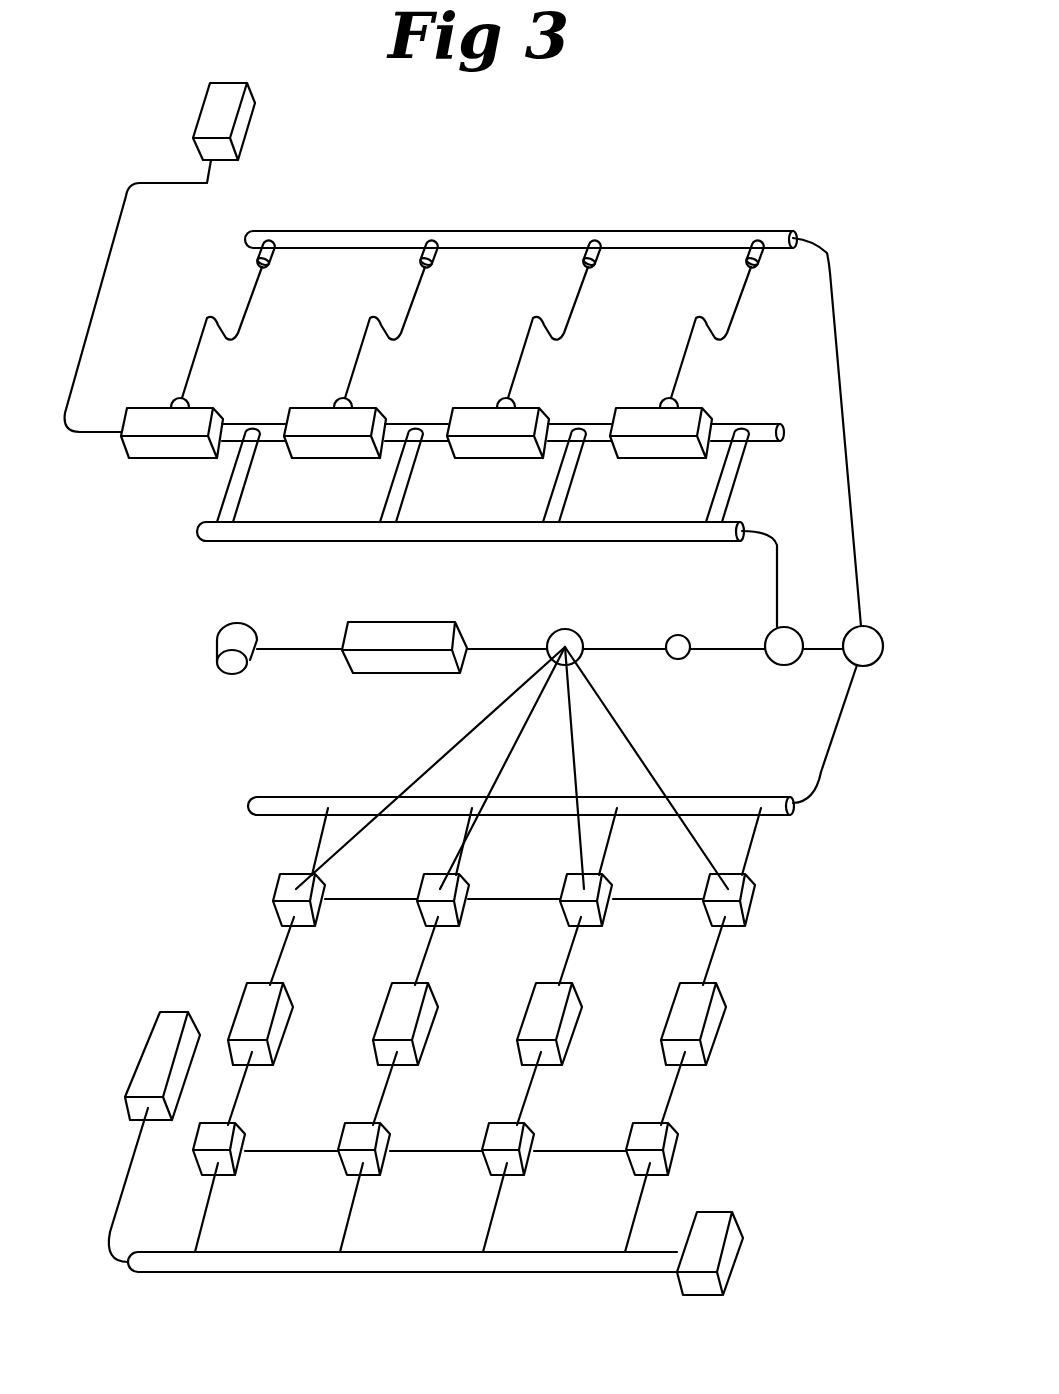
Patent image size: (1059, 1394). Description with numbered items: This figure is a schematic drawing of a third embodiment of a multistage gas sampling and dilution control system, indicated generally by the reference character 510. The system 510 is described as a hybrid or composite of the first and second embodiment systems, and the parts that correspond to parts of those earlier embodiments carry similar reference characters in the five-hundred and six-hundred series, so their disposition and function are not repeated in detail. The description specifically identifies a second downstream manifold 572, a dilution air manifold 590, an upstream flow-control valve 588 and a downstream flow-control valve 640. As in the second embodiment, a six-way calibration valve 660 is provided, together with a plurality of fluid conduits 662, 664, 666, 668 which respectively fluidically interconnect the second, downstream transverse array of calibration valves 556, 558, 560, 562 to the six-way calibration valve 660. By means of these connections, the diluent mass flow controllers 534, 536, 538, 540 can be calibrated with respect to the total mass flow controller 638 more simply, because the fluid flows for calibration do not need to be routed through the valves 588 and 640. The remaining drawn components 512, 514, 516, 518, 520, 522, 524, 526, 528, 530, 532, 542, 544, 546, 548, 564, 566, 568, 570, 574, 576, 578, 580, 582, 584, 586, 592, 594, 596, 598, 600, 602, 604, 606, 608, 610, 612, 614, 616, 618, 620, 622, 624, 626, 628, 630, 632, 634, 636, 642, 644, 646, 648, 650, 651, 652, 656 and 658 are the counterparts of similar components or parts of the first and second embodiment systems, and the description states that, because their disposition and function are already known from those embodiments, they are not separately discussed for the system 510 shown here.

The multistage gas sampling and dilution control system 510 is at (778, 176).
The source module 512 is at (167, 1032).
The lower bus rod 514 is at (378, 1262).
The lead 516 is at (123, 1190).
The connector 518 is at (240, 1158).
The connector 520 is at (385, 1158).
The connector 522 is at (530, 1160).
The connector 524 is at (680, 1148).
The lead 526 is at (205, 1225).
The lead 528 is at (350, 1225).
The lead 530 is at (490, 1222).
The end module 532 is at (637, 1222).
The diluent mass flow controller 534 is at (284, 1018).
The diluent mass flow controller 536 is at (429, 1018).
The diluent mass flow controller 538 is at (572, 1018).
The diluent mass flow controller 540 is at (717, 1018).
The lead 542 is at (243, 1107).
The lead 544 is at (388, 1107).
The lead 546 is at (531, 1107).
The lead 548 is at (673, 1107).
The calibration valve 556 is at (319, 906).
The calibration valve 558 is at (464, 906).
The calibration valve 560 is at (607, 905).
The calibration valve 562 is at (750, 905).
The lead 564 is at (290, 945).
The lead 566 is at (436, 945).
The lead 568 is at (578, 943).
The lead 570 is at (720, 942).
The second downstream manifold 572 is at (278, 795).
The lead 574 is at (327, 808).
The lead 576 is at (463, 852).
The lead 578 is at (603, 850).
The lead 580 is at (748, 848).
The wire 582 is at (343, 898).
The wire 584 is at (490, 898).
The wire 586 is at (633, 898).
The upstream flow-control valve 588 is at (843, 660).
The dilution air manifold 590 is at (523, 230).
The control module 592 is at (243, 125).
The valve module 594 is at (168, 448).
The valve module 596 is at (331, 448).
The valve module 598 is at (494, 448).
The valve module 600 is at (659, 448).
The wire 602 is at (127, 236).
The pin 604 is at (265, 266).
The pin 606 is at (430, 266).
The pin 608 is at (593, 266).
The pin 610 is at (754, 258).
The terminal 612 is at (172, 398).
The terminal 614 is at (334, 396).
The terminal 616 is at (497, 396).
The terminal 618 is at (660, 396).
The hook 620 is at (214, 315).
The hook 622 is at (377, 315).
The hook 624 is at (540, 315).
The hook 626 is at (703, 315).
The support post 628 is at (230, 478).
The support post 630 is at (393, 478).
The support post 632 is at (556, 478).
The support post 634 is at (720, 476).
The support rod 636 is at (333, 530).
The total mass flow controller 638 is at (400, 622).
The downstream flow-control valve 640 is at (770, 633).
The node 642 is at (676, 636).
The cap 644 is at (242, 622).
The lead 646 is at (780, 568).
The wire segment 648 is at (722, 650).
The wire segment 650 is at (620, 650).
The wire segment 651 is at (502, 648).
The wire 652 is at (297, 652).
The wire segment 656 is at (825, 650).
The lead 658 is at (845, 415).
The six-way calibration valve 660 is at (557, 630).
The fluid conduit 662 is at (493, 702).
The fluid conduit 664 is at (500, 745).
The fluid conduit 666 is at (568, 753).
The fluid conduit 668 is at (653, 777).